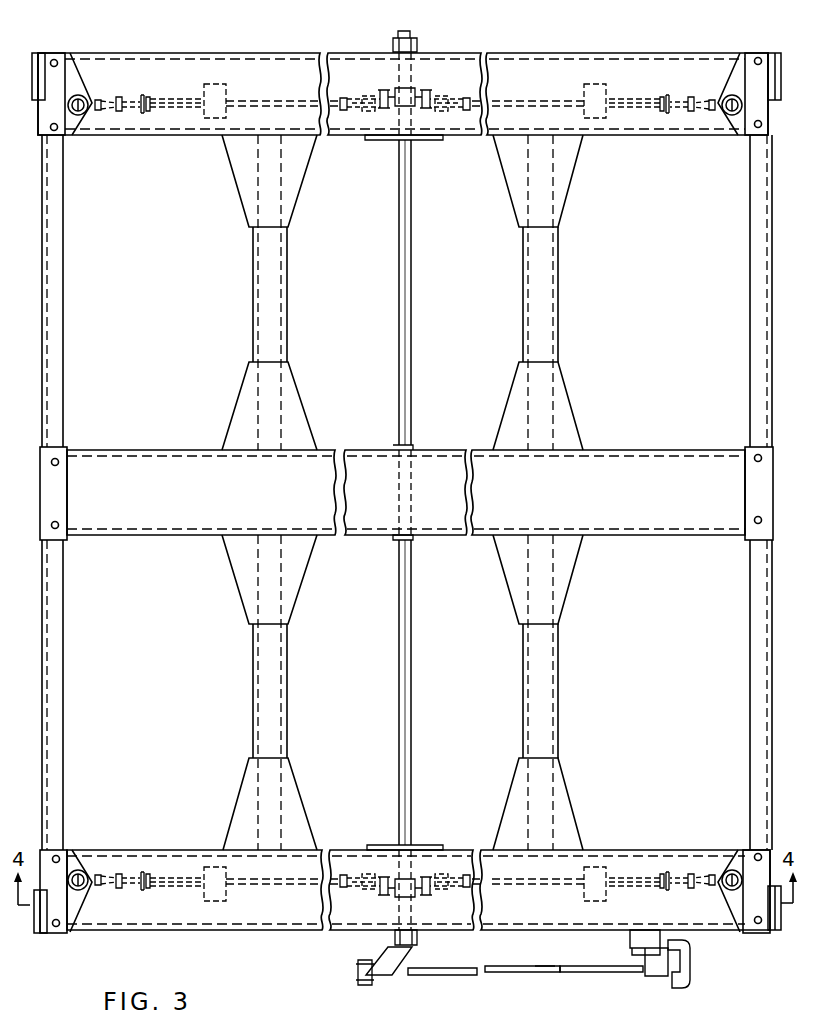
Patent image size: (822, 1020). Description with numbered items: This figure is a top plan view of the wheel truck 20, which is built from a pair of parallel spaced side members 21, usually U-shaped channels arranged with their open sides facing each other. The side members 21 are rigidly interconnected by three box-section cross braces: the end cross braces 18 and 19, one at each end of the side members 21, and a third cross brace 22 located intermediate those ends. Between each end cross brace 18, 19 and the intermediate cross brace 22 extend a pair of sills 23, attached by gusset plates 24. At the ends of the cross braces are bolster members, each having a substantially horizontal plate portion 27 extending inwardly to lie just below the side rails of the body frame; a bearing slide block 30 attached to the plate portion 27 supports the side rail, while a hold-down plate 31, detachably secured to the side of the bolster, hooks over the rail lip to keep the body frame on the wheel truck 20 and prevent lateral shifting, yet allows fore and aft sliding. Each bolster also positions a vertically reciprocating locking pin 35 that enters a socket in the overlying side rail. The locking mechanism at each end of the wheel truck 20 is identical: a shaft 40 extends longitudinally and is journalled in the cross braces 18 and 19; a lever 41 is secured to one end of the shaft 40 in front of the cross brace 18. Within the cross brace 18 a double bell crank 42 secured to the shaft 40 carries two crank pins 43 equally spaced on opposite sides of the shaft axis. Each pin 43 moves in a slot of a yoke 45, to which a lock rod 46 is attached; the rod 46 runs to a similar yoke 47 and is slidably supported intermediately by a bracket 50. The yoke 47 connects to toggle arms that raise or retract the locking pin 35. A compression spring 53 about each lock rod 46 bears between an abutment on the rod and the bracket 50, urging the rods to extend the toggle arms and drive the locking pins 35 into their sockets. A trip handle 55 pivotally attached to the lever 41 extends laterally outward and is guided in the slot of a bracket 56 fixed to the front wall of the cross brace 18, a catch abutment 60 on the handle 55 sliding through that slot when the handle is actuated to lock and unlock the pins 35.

The cross brace 18 is at (626, 849).
The cross brace 19 is at (642, 136).
The wheel truck 20 is at (157, 444).
The side members 21 is at (63, 715).
The cross brace 22 is at (672, 449).
The sills 23 is at (253, 300).
The gusset plates 24 is at (240, 191).
The horizontal plate portion 27 is at (75, 82).
The bearing slide block 30 is at (56, 77).
The hold-down plate 31 is at (39, 62).
The locking pin 35 is at (80, 117).
The shaft 40 is at (399, 678).
The lever 41 is at (408, 958).
The double bell crank 42 is at (408, 100).
The crank pins 43 is at (425, 84).
The yoke 45 is at (451, 92).
The lock rod 46 is at (287, 97).
The yoke 47 is at (112, 113).
The bracket 50 is at (228, 111).
The compression spring 53 is at (187, 95).
The trip handle 55 is at (506, 975).
The bracket 56 is at (646, 977).
The catch abutment 60 is at (558, 974).